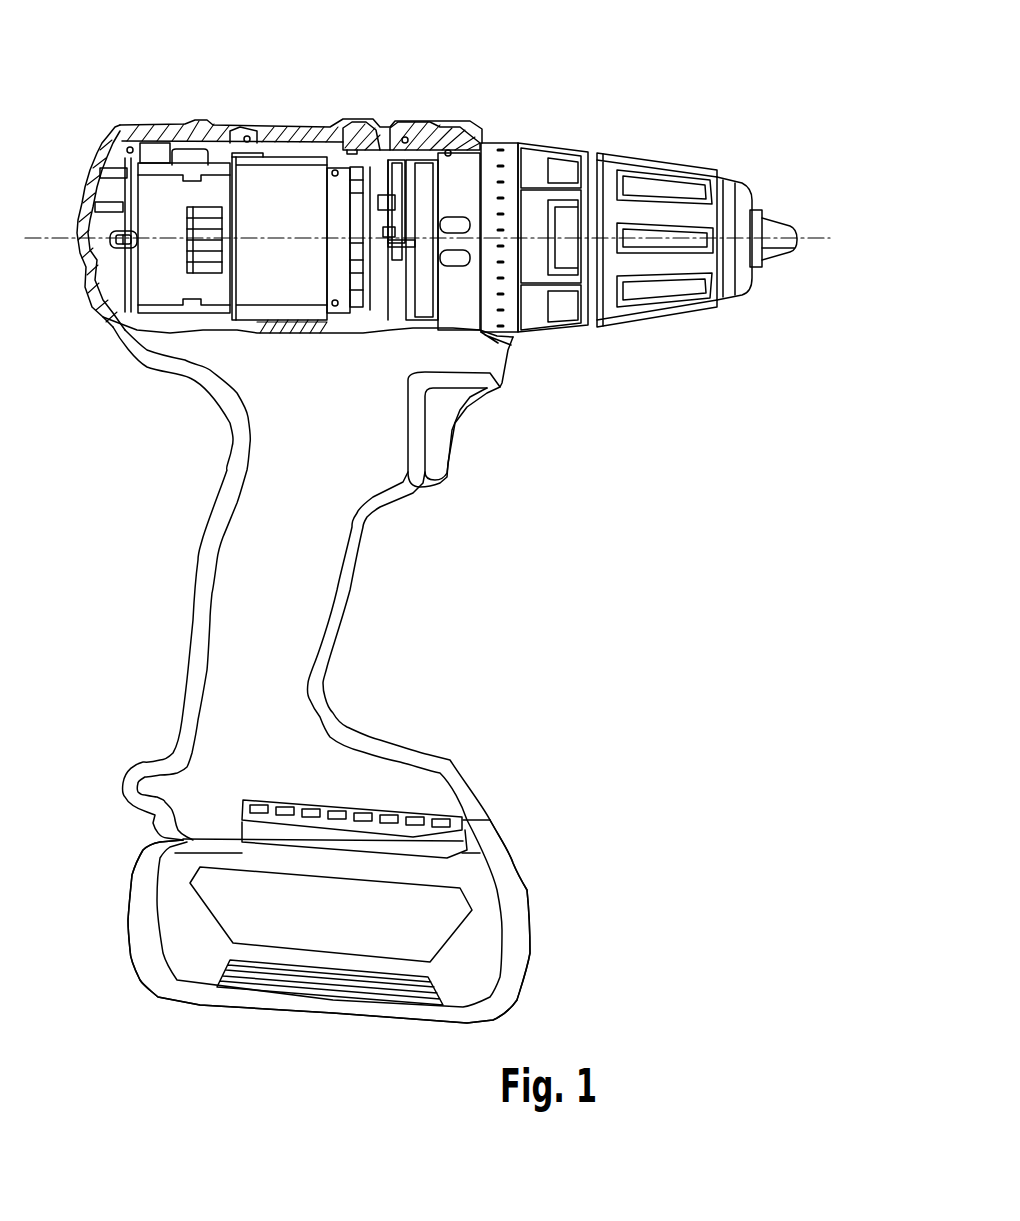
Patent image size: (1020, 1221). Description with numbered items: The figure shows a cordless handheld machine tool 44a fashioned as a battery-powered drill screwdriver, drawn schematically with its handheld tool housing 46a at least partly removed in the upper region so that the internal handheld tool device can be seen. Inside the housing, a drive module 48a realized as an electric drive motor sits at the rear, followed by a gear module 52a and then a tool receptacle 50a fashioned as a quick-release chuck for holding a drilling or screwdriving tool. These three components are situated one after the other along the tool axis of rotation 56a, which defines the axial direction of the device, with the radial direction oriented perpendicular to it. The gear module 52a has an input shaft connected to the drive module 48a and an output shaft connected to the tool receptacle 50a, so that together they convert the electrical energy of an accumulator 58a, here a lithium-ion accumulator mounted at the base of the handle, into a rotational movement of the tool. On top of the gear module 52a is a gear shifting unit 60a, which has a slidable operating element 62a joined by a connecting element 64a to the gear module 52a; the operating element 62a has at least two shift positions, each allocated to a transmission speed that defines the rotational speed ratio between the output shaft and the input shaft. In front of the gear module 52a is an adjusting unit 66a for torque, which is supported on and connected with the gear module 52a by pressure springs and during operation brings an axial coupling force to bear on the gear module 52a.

The cordless handheld machine tool 44a is at (731, 117).
The handheld tool housing 46a is at (390, 427).
The drive module 48a is at (285, 170).
The tool receptacle 50a is at (770, 311).
The gear module 52a is at (460, 172).
The tool axis of rotation 56a is at (830, 238).
The accumulator 58a is at (552, 916).
The gear shifting unit 60a is at (346, 109).
The operating element 62a is at (359, 126).
The connecting element 64a is at (396, 168).
The adjusting unit 66a is at (543, 352).